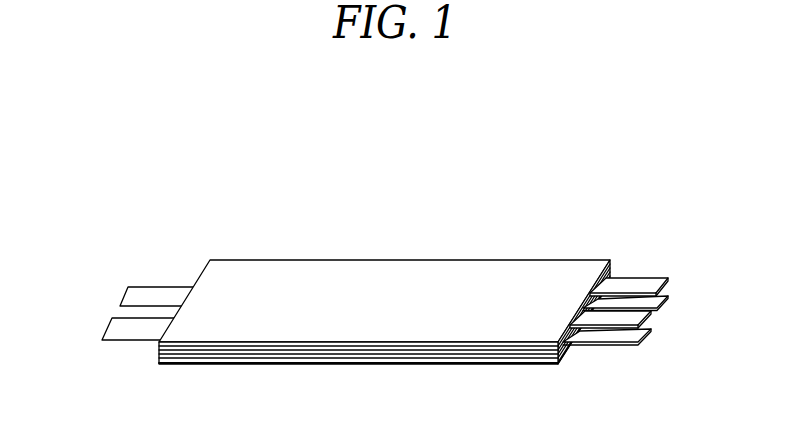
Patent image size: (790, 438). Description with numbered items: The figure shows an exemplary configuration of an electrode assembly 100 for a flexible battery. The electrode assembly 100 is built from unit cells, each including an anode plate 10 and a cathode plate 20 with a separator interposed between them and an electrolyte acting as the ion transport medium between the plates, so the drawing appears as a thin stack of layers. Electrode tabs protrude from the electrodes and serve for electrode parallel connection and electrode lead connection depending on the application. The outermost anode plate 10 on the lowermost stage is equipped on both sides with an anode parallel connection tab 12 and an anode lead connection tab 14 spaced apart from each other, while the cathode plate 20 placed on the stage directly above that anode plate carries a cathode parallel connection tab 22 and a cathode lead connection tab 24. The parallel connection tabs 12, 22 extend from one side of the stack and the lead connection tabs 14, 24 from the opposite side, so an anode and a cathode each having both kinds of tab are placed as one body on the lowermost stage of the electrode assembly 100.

The electrode assembly 100 is at (202, 140).
The anode plate 10 is at (384, 321).
The cathode plate 20 is at (355, 346).
The anode parallel connection tab 12 is at (662, 298).
The cathode parallel connection tab 22 is at (648, 328).
The anode lead connection tab 14 is at (126, 291).
The cathode lead connection tab 24 is at (110, 320).